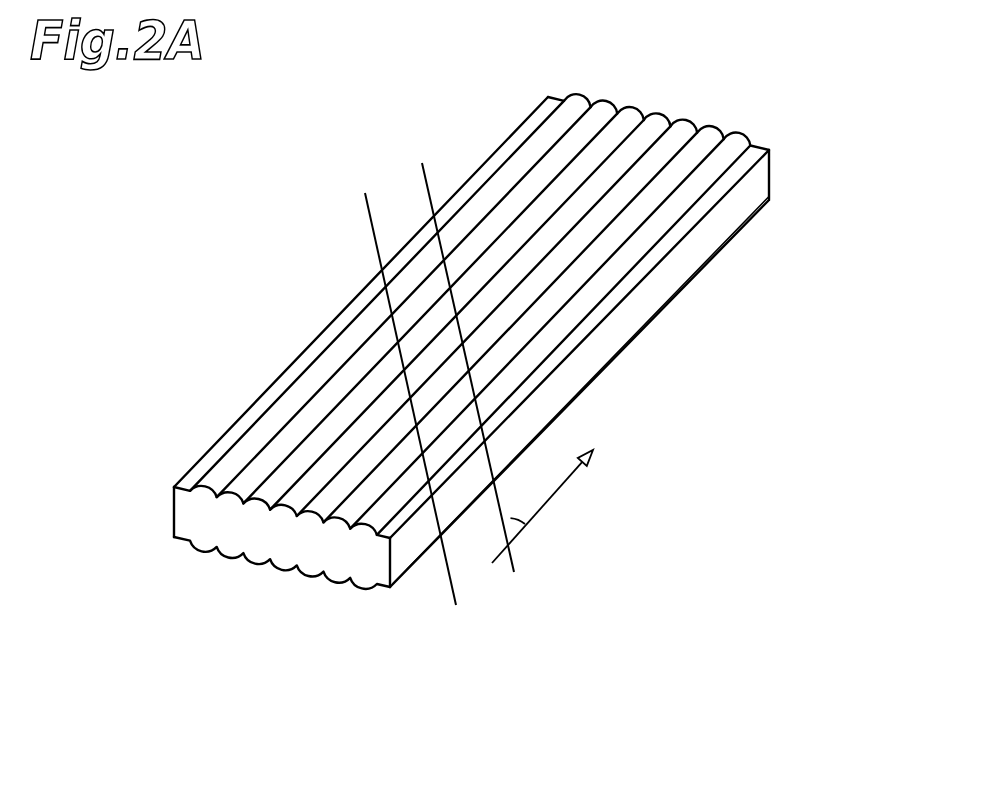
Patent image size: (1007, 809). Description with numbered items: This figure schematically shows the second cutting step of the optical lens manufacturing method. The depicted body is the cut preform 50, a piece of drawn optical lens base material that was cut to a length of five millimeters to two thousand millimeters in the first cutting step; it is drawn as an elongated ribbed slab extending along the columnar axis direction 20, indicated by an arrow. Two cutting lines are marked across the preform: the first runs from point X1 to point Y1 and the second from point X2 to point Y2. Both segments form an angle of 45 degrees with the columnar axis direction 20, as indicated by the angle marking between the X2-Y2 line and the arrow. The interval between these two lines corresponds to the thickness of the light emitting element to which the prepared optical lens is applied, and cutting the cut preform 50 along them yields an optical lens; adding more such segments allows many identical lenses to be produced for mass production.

The cut preform 50 is at (783, 161).
The columnar axis direction 20 is at (552, 496).
The 45° angle 45 is at (529, 500).
The X1 end of X1-Y1 line X1 is at (400, 375).
The Y1 end of X1-Y1 line Y1 is at (469, 621).
The X2 end of X2-Y2 line X2 is at (457, 345).
The Y2 end of X2-Y2 line Y2 is at (528, 592).